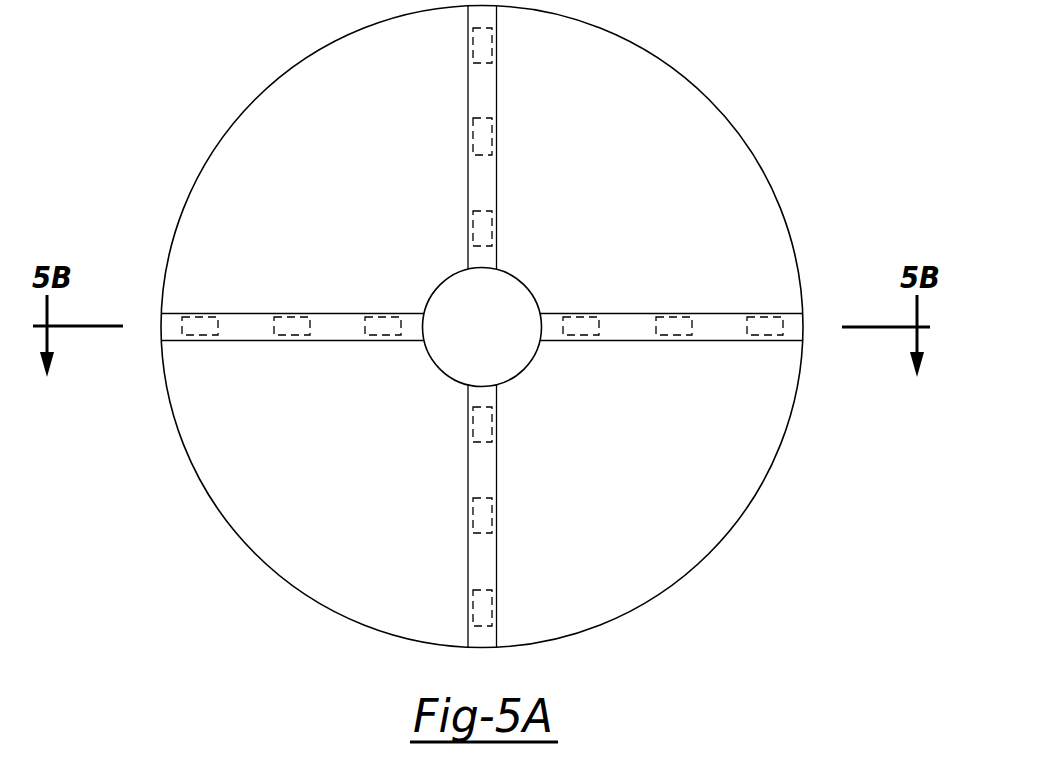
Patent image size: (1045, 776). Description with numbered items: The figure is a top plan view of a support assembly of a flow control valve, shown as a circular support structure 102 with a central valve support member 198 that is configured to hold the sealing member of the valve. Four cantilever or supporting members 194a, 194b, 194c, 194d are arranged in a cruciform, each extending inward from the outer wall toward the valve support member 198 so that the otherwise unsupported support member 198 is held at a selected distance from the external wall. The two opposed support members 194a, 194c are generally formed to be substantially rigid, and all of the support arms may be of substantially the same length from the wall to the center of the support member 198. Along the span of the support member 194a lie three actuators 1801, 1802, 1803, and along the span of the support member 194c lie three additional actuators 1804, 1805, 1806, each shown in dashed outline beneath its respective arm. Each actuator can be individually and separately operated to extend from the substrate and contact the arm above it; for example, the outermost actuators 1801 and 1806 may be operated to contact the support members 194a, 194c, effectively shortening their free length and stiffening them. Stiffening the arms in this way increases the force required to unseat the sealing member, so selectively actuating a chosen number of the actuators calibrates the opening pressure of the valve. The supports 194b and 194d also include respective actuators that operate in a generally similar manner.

The support structure 102 is at (768, 99).
The valve support member 198 is at (536, 278).
The support cantilever member 194a is at (243, 341).
The support cantilever member 194b is at (468, 452).
The support cantilever member 194c is at (722, 313).
The support cantilever member 194d is at (497, 103).
The actuator 1801 is at (202, 320).
The actuator 1802 is at (282, 318).
The actuator 1803 is at (370, 318).
The actuator 1804 is at (578, 328).
The actuator 1805 is at (671, 328).
The actuator 1806 is at (760, 328).